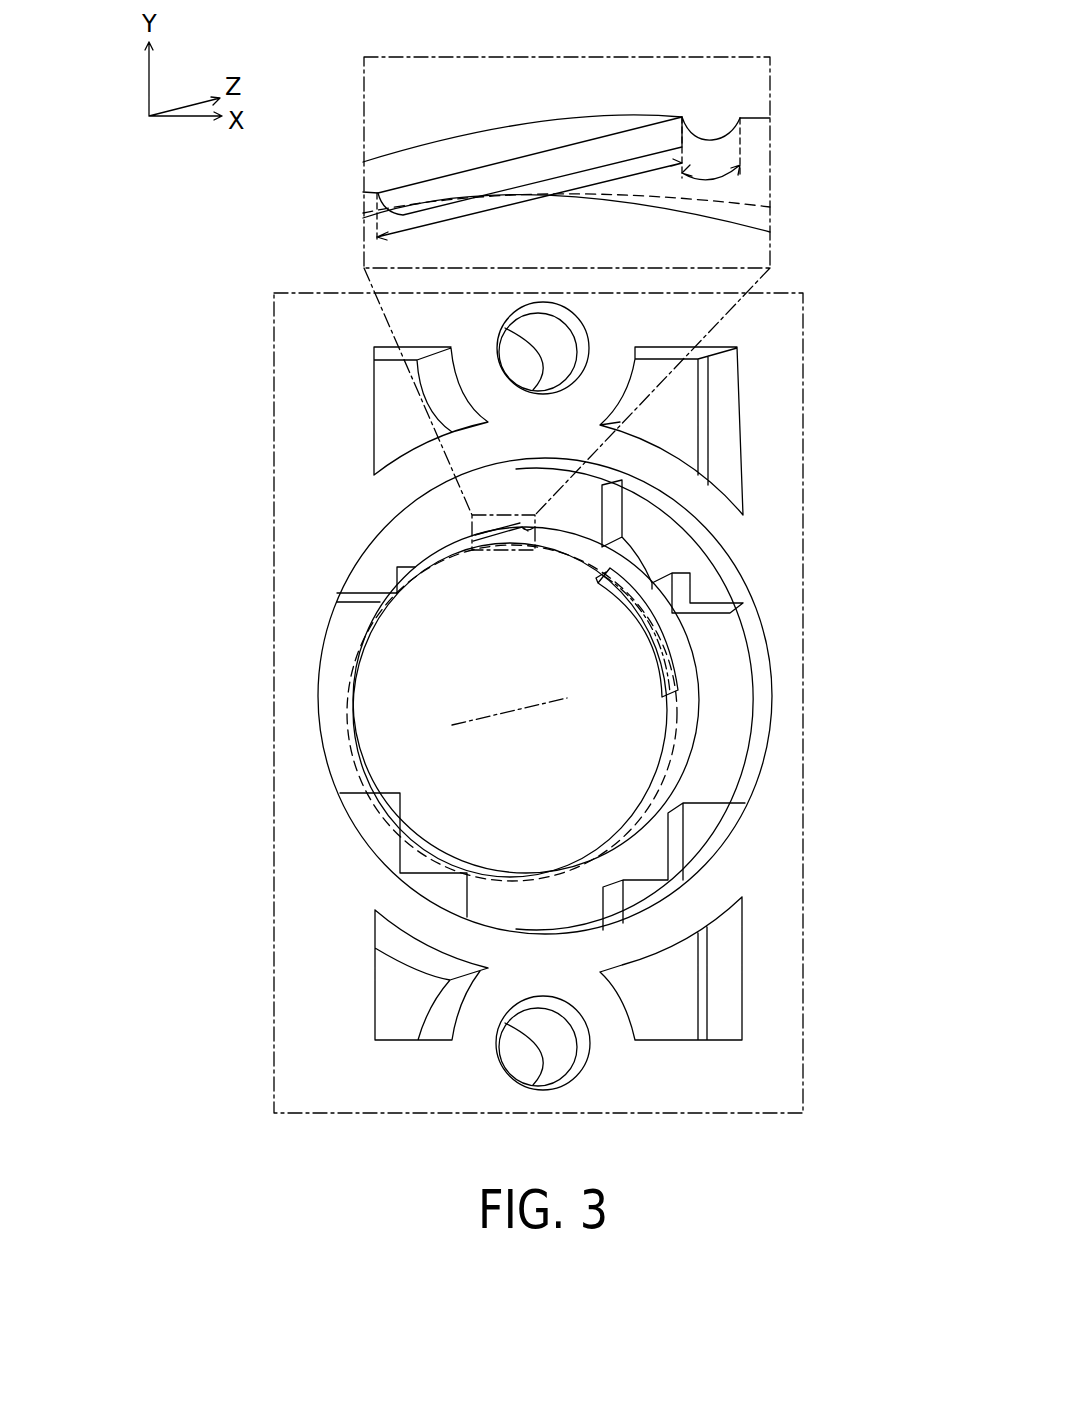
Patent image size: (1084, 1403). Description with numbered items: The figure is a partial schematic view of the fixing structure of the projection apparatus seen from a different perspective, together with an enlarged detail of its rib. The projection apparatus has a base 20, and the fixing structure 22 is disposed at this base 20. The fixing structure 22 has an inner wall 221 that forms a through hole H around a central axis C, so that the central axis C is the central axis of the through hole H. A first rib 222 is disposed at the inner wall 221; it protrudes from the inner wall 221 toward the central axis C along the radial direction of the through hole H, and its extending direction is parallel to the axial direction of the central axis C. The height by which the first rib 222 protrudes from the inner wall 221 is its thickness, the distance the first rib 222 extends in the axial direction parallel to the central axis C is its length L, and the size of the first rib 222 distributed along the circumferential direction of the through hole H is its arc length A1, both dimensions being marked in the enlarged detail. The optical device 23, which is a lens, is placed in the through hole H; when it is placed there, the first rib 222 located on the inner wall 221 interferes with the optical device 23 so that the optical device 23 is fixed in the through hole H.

The base 20 is at (755, 540).
The fixing structure 22 is at (725, 685).
The inner wall 221 is at (364, 702).
The first rib 222 is at (710, 128).
The optical device 23 is at (353, 750).
The through hole H is at (600, 860).
The central axis C is at (507, 700).
The length L is at (529, 179).
The arc length A1 is at (716, 162).